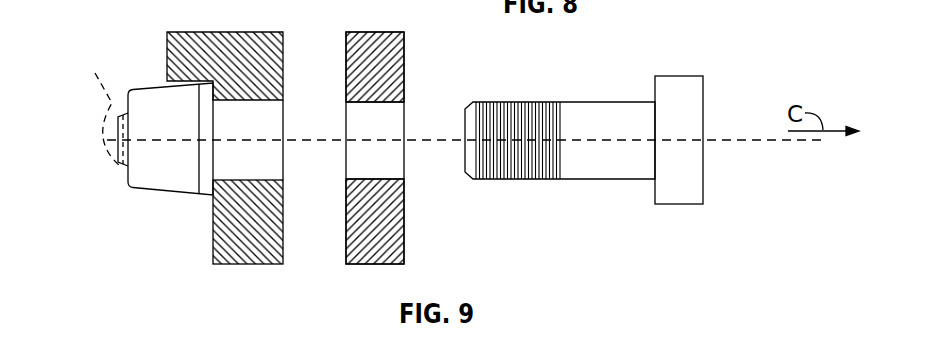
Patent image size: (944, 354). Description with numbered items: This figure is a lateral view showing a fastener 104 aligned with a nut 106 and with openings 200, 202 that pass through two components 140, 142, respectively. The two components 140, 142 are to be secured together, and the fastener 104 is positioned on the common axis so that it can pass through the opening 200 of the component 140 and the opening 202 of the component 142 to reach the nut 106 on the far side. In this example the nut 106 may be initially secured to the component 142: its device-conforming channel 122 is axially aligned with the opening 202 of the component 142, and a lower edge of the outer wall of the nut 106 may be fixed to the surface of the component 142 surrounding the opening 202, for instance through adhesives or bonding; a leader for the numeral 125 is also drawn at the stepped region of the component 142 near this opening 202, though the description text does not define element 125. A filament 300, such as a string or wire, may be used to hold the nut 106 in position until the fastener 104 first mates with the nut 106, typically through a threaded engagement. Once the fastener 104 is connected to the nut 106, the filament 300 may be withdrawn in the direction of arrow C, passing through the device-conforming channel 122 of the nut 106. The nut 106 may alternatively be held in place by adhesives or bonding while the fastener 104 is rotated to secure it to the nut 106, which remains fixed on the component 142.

The fastener 104 is at (607, 101).
The nut 106 is at (158, 178).
The device-conforming channel 122 is at (113, 152).
The stepped bore 125 is at (215, 90).
The component 140 is at (377, 31).
The component 142 is at (230, 31).
The opening 200 is at (388, 102).
The opening 202 is at (263, 100).
The filament 300 is at (97, 105).